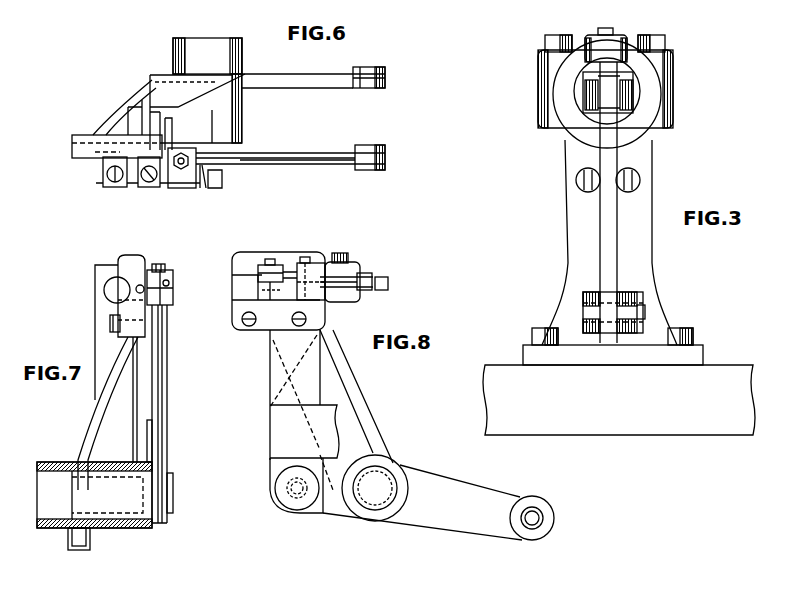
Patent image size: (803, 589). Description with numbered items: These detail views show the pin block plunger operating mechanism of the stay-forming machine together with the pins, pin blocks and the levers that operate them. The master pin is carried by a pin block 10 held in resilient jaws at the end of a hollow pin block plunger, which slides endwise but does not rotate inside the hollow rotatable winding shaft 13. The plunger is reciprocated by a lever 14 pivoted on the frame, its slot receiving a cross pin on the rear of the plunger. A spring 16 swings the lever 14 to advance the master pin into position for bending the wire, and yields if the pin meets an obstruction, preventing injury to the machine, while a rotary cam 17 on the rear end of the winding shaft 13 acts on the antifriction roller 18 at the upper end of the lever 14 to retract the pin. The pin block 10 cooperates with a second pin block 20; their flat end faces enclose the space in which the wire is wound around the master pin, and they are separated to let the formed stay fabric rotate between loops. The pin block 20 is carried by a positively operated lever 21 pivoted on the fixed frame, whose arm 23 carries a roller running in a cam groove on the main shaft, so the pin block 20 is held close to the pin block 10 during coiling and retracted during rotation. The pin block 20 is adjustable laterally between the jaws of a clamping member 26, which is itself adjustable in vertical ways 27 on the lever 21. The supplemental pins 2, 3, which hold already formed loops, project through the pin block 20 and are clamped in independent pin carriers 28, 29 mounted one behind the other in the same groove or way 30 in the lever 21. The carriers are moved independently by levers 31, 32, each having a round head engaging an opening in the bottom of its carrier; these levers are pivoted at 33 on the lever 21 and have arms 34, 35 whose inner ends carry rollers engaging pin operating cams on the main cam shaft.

In FIG. 7, the supplemental pin 2 is at (176, 301).
In FIG. 8, the supplemental pin 2 is at (336, 302).
In FIG. 7, the supplemental pin 3 is at (170, 283).
In FIG. 8, the supplemental pin 3 is at (350, 270).
In FIG. 8, the pin block 10 is at (383, 290).
In FIG. 3, the hollow rotatable winding shaft 13 is at (580, 93).
In FIG. 3, the lever 14 is at (618, 158).
In FIG. 3, the spring 16 is at (576, 178).
In FIG. 3, the rotary cam 17 is at (645, 72).
In FIG. 3, the roller 18 is at (620, 44).
In FIG. 8, the pin block 20 is at (364, 273).
In FIG. 6, the lever 21 is at (138, 100).
In FIG. 6, the arm 23 is at (312, 74).
In FIG. 7, the arm 23 is at (84, 422).
In FIG. 8, the arm 23 is at (462, 483).
In FIG. 6, the clamping member 26 is at (188, 168).
In FIG. 8, the clamping member 26 is at (340, 253).
In FIG. 6, the vertical ways 27 is at (143, 96).
In FIG. 8, the pin carrier 28 is at (265, 265).
In FIG. 8, the pin carrier 29 is at (302, 263).
In FIG. 7, the groove or way 30 is at (110, 305).
In FIG. 7, the lever 31 is at (160, 384).
In FIG. 8, the lever 31 is at (272, 382).
In FIG. 7, the lever 32 is at (166, 406).
In FIG. 8, the lever 32 is at (310, 380).
In FIG. 7, the pivot 33 is at (173, 505).
In FIG. 8, the pivot 33 is at (283, 500).
In FIG. 6, the arm 34 is at (270, 153).
In FIG. 7, the arm 34 is at (133, 433).
In FIG. 6, the arm 35 is at (275, 163).
In FIG. 7, the arm 35 is at (153, 440).
In FIG. 8, the arm 35 is at (272, 437).